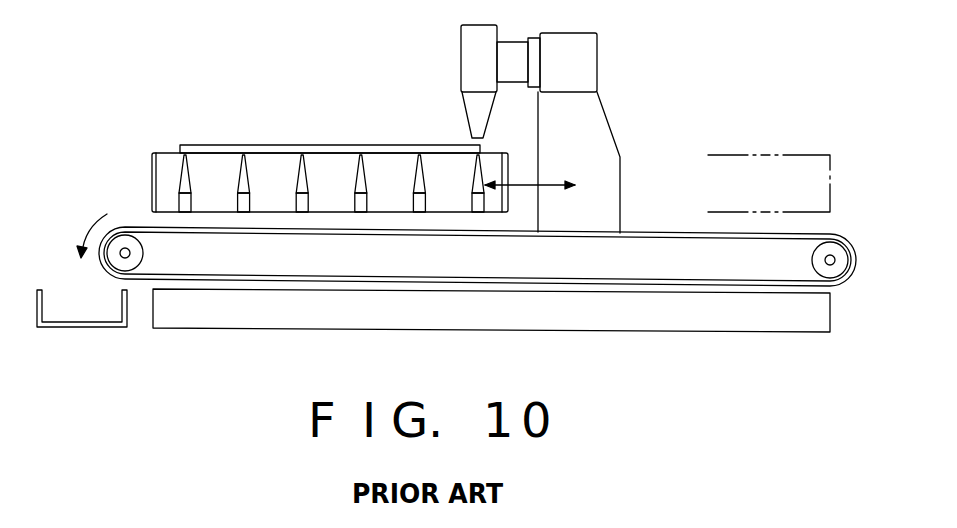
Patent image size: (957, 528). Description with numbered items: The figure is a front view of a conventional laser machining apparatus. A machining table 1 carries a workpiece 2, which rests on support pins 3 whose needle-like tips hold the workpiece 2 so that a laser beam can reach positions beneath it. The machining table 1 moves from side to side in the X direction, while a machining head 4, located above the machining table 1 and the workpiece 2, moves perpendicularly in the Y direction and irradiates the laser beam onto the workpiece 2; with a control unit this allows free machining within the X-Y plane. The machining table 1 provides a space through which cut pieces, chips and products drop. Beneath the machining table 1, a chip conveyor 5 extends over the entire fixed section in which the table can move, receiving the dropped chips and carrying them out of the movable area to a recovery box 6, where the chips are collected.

The machining table 1 is at (151, 176).
The workpiece 2 is at (227, 148).
The support pin 3 is at (311, 174).
The machining head 4 is at (472, 48).
The chip conveyor 5 is at (835, 236).
The recovery box 6 is at (87, 327).